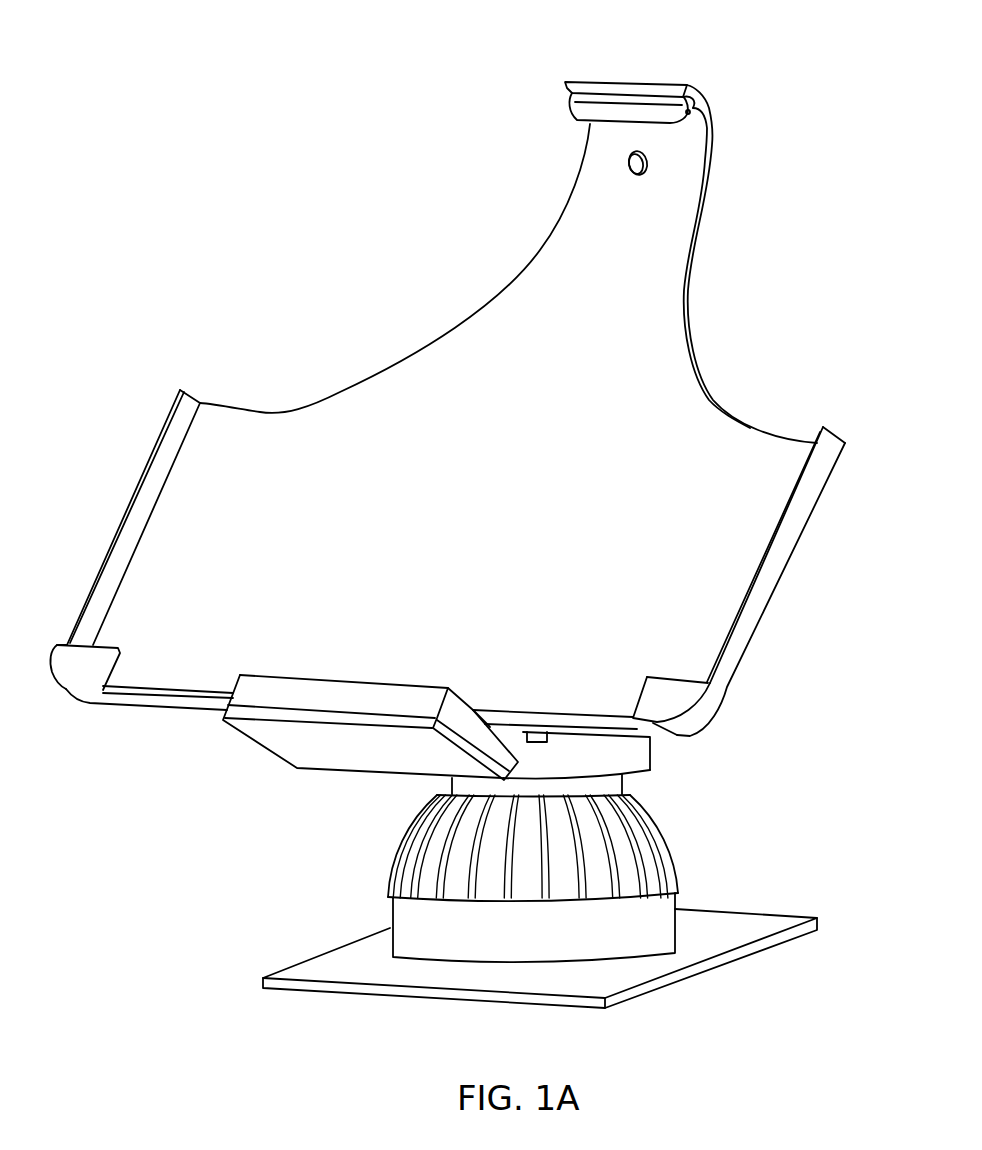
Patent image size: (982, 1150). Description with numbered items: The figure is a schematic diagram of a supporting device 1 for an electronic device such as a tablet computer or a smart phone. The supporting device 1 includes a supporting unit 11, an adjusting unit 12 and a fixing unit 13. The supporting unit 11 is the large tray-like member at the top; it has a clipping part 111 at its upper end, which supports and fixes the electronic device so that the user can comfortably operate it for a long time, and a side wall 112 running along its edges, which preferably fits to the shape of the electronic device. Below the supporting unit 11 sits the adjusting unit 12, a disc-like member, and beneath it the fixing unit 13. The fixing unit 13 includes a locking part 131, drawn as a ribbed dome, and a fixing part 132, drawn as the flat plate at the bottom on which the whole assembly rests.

The supporting device 1 is at (273, 63).
The supporting unit 11 is at (713, 187).
The clipping part 111 is at (592, 110).
The side wall 112 is at (155, 482).
The adjusting unit 12 is at (664, 760).
The fixing unit 13 is at (827, 777).
The locking part 131 is at (672, 858).
The fixing part 132 is at (748, 922).